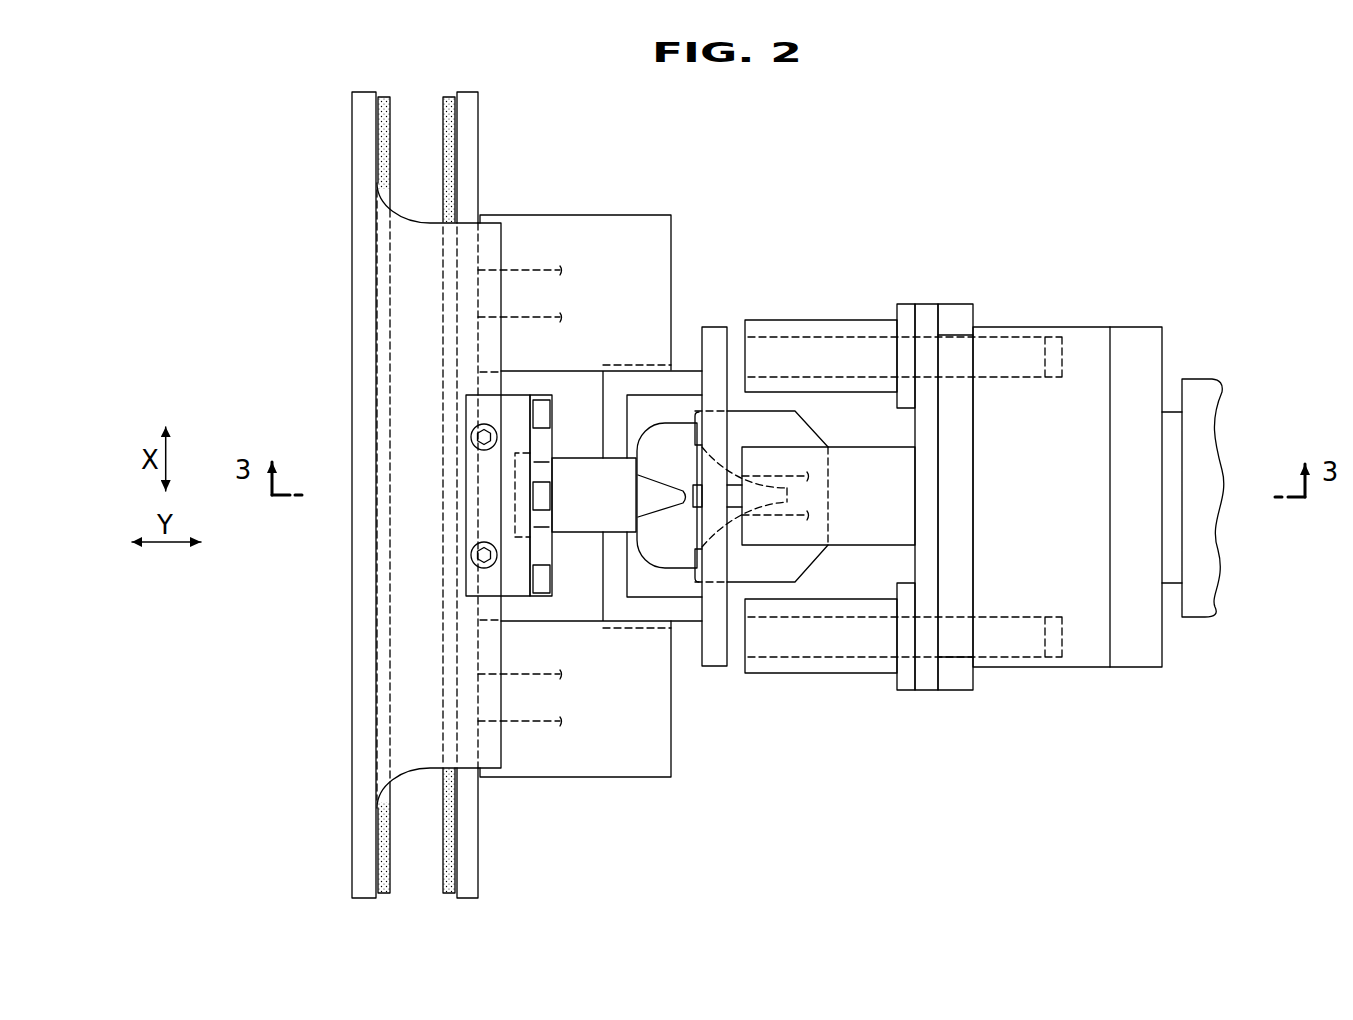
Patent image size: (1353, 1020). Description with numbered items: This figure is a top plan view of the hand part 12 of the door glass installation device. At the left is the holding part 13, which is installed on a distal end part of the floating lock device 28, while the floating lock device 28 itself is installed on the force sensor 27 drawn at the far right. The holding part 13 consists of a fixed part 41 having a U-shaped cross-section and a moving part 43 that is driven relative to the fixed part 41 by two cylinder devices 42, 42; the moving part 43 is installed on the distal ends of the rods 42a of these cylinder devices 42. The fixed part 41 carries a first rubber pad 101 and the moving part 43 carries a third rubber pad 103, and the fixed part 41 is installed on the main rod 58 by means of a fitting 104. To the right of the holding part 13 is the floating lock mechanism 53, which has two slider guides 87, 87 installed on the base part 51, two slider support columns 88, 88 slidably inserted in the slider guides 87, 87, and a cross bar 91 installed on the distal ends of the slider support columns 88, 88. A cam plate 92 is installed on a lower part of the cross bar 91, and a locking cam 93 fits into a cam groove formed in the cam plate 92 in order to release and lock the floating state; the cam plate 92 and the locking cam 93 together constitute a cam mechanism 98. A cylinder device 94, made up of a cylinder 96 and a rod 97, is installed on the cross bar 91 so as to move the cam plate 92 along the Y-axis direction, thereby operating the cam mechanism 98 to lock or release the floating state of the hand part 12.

The hand part 12 is at (1001, 204).
The holding part 13 is at (349, 246).
The force sensor 27 is at (1200, 377).
The floating lock device 28 is at (838, 317).
The fixed part 41 is at (349, 387).
The cylinder device 42 is at (633, 250).
The rod 42a is at (527, 268).
The moving part 43 is at (473, 833).
The base part 51 is at (1038, 671).
The floating lock mechanism 53 is at (819, 675).
The main rod 58 is at (583, 474).
The slider guide 87 is at (805, 332).
The slider support column 88 is at (952, 333).
The cross bar 91 is at (716, 340).
The cam plate 92 is at (773, 417).
The locking cam 93 is at (663, 500).
The cylinder device 94 is at (852, 445).
The cylinder 96 is at (870, 527).
The rod 97 is at (735, 497).
The cam mechanism 98 is at (678, 468).
The first rubber pad 101 is at (390, 138).
The third rubber pad 103 is at (442, 138).
The fitting 104 is at (518, 582).